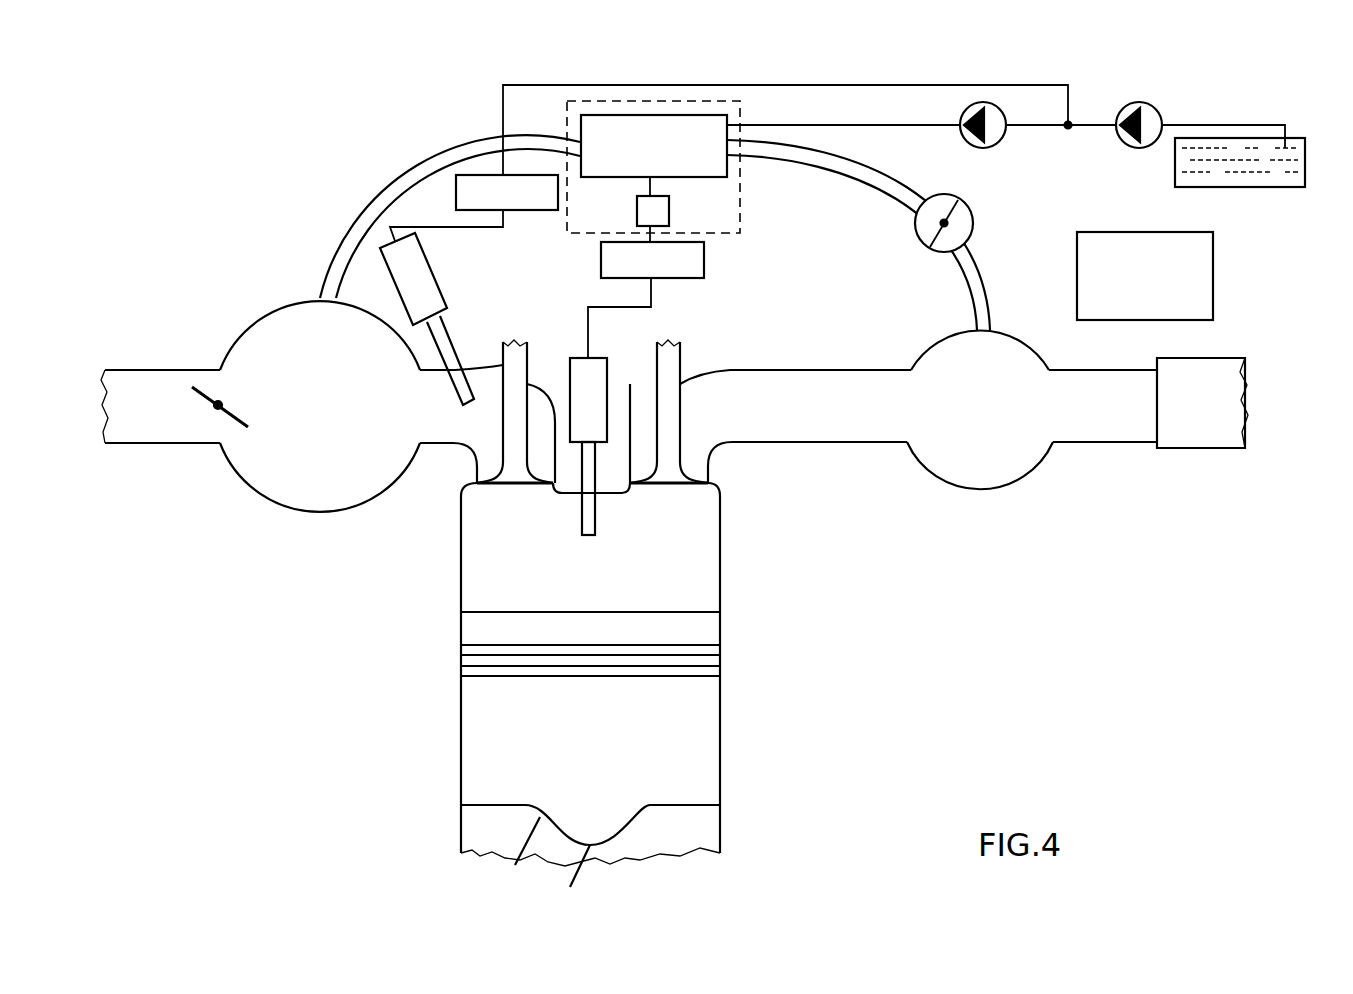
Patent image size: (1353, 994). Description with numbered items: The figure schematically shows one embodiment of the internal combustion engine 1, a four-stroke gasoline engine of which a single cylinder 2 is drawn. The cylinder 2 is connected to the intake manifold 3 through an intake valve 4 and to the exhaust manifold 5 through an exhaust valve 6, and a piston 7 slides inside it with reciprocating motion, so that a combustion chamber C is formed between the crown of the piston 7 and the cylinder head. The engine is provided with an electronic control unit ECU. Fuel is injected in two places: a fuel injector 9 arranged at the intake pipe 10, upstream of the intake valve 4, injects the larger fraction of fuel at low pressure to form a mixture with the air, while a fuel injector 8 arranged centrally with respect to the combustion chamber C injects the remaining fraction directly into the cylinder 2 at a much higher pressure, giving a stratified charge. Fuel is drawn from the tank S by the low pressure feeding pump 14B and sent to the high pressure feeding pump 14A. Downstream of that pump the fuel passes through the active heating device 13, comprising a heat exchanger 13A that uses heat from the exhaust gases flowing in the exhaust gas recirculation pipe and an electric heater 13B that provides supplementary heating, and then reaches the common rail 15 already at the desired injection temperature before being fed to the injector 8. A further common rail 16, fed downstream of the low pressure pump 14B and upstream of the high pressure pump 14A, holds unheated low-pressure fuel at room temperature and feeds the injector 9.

The internal combustion engine 1 is at (314, 784).
The cylinder 2 is at (722, 611).
The intake manifold 3 is at (237, 503).
The intake valve 4 is at (512, 488).
The exhaust manifold 5 is at (980, 510).
The exhaust valve 6 is at (672, 488).
The piston 7 is at (710, 723).
The fuel injector 8 is at (570, 368).
The fuel injector 9 is at (428, 280).
The intake pipe 10 is at (458, 420).
The active heating device 13 is at (742, 178).
The heat exchanger 13A is at (703, 128).
The electric heater 13B is at (662, 212).
The high pressure feeding pump 14A is at (994, 141).
The low pressure feeding pump 14B is at (1148, 114).
The common rail 15 is at (700, 254).
The common rail 16 is at (527, 212).
The tank S is at (1253, 190).
The combustion chamber C is at (484, 548).
The electronic control unit ECU is at (1145, 276).